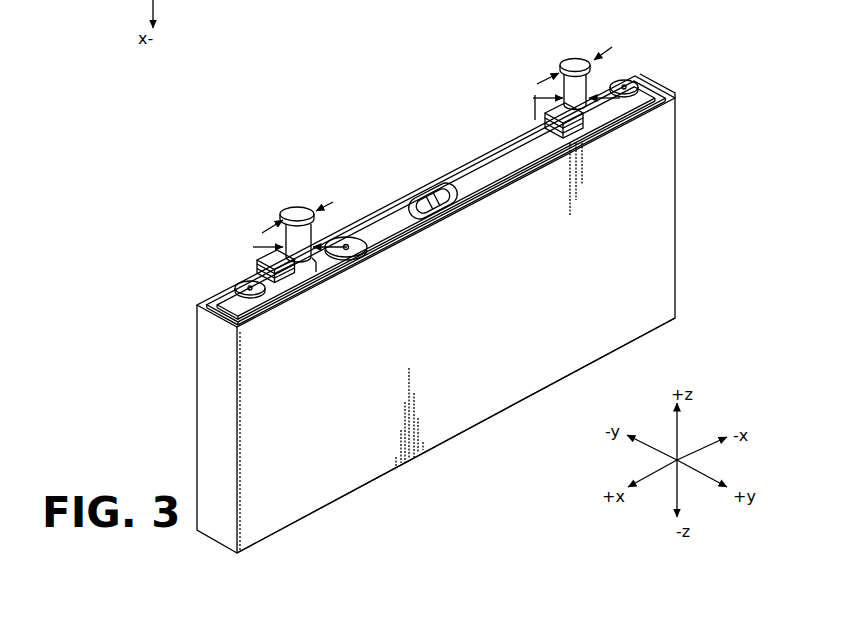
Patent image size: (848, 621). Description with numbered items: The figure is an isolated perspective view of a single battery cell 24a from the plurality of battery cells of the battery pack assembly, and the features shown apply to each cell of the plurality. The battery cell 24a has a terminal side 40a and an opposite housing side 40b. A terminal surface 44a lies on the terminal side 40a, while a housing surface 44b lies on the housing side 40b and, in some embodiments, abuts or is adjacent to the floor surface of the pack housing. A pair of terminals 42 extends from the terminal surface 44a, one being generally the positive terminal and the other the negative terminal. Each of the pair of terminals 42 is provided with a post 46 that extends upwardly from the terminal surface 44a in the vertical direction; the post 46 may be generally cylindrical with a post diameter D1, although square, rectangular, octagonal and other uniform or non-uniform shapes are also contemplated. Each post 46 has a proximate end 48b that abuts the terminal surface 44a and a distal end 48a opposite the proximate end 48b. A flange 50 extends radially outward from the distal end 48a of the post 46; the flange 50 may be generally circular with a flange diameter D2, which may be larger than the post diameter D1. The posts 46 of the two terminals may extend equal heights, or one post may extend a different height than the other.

The battery cell 24a is at (320, 100).
The terminal side 40a is at (615, 63).
The housing side 40b is at (645, 352).
The pair of terminals 42 is at (220, 276).
The terminal surface 44a is at (468, 177).
The housing surface 44b is at (490, 422).
The post 46 is at (320, 260).
The distal end 48a is at (282, 225).
The proximate end 48b is at (316, 268).
The flange 50 is at (297, 212).
The post diameter D1 is at (347, 248).
The flange diameter D2 is at (333, 201).